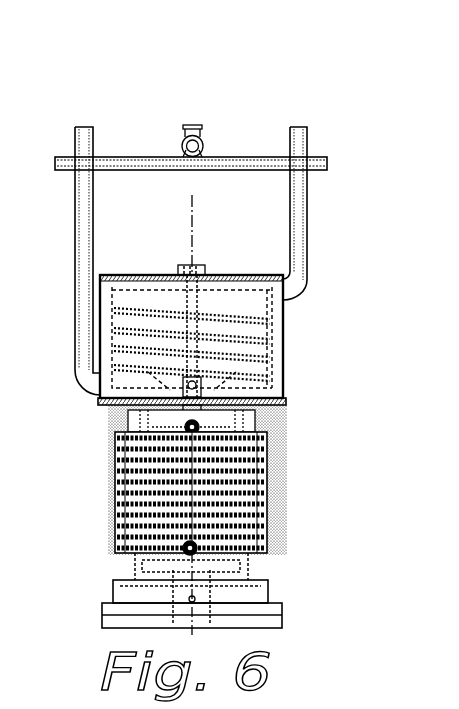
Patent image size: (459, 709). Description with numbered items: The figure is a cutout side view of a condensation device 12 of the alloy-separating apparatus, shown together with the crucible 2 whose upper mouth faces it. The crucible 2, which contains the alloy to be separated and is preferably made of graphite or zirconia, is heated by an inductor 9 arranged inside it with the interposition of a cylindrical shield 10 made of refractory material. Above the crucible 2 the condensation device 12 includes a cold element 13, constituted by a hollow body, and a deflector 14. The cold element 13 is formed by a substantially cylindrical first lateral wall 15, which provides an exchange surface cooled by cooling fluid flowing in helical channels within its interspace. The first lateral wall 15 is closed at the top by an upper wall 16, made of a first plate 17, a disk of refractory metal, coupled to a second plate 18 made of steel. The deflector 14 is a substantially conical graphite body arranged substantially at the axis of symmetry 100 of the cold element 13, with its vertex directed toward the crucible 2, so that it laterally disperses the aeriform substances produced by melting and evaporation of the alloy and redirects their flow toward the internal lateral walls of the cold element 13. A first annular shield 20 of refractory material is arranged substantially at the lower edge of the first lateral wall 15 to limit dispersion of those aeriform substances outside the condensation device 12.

The condensation device 12 is at (308, 102).
The cold element 13 is at (283, 323).
The upper wall 16 is at (140, 277).
The first annular shield 20 is at (277, 400).
The first lateral wall 15 is at (112, 300).
The first plate 17 is at (252, 290).
The deflector 14 is at (205, 373).
The second plate 18 is at (165, 275).
The axis of symmetry 100 is at (194, 227).
The cylindrical shield 10 is at (128, 428).
The crucible 2 is at (237, 410).
The inductor 9 is at (263, 495).